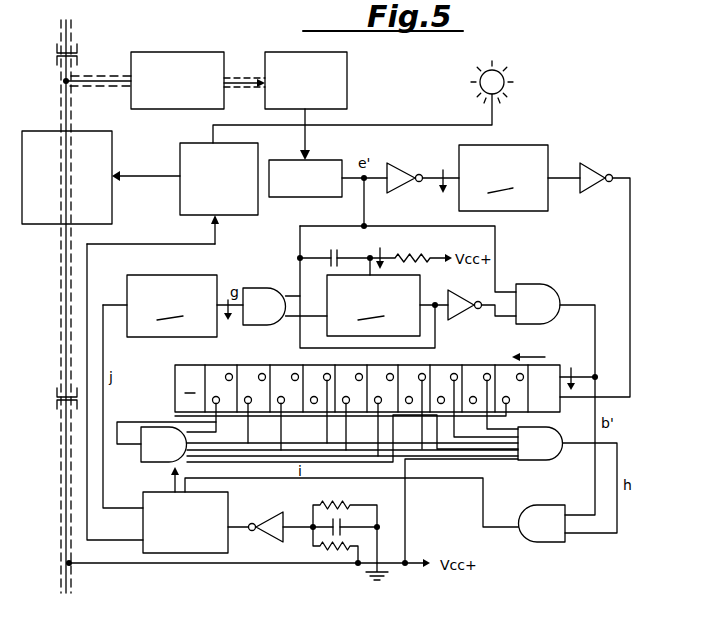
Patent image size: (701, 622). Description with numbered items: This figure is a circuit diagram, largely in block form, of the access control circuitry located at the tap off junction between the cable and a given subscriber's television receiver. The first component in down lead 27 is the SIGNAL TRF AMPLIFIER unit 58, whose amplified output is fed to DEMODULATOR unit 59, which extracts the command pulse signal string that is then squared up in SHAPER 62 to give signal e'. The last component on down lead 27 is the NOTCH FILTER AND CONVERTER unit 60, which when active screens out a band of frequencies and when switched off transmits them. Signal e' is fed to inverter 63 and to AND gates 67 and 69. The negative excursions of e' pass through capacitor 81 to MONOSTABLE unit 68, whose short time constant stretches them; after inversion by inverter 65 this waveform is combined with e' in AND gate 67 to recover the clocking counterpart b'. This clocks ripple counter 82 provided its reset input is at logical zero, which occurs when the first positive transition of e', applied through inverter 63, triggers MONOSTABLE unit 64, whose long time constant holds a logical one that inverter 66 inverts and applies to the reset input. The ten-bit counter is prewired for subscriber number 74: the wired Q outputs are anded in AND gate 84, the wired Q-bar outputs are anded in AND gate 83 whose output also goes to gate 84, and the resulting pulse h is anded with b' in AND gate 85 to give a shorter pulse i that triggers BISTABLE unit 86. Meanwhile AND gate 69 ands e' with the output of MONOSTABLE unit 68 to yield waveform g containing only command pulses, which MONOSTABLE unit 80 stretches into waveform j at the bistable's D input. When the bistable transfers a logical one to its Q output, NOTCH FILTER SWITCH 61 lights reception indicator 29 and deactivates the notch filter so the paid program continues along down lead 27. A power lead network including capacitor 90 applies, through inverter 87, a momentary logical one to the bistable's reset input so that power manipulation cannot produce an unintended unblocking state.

The down lead 27 is at (62, 32).
The reception indicator 29 is at (503, 82).
The SIGNAL TRF AMPLIFIER unit 58 is at (147, 63).
The DEMODULATOR unit 59 is at (348, 78).
The NOTCH FILTER AND CONVERTER unit 60 is at (102, 163).
The NOTCH FILTER SWITCH 61 is at (247, 157).
The SHAPER 62 is at (327, 163).
The inverter 63 is at (398, 167).
The MONOSTABLE unit 64 is at (518, 145).
The inverter 65 is at (465, 318).
The inverter 66 is at (592, 173).
The AND gate 67 is at (545, 295).
The MONOSTABLE unit 68 is at (330, 316).
The AND gate 69 is at (263, 287).
The subscriber serial identification 74 is at (304, 437).
The MONOSTABLE unit 80 is at (190, 275).
The capacitor 81 is at (333, 250).
The ripple counter 82 is at (473, 365).
The AND gate 83 is at (155, 448).
The AND gate 84 is at (545, 450).
The AND gate 85 is at (547, 510).
The BISTABLE unit 86 is at (229, 532).
The inverter 87 is at (273, 518).
The capacitor 90 is at (312, 520).